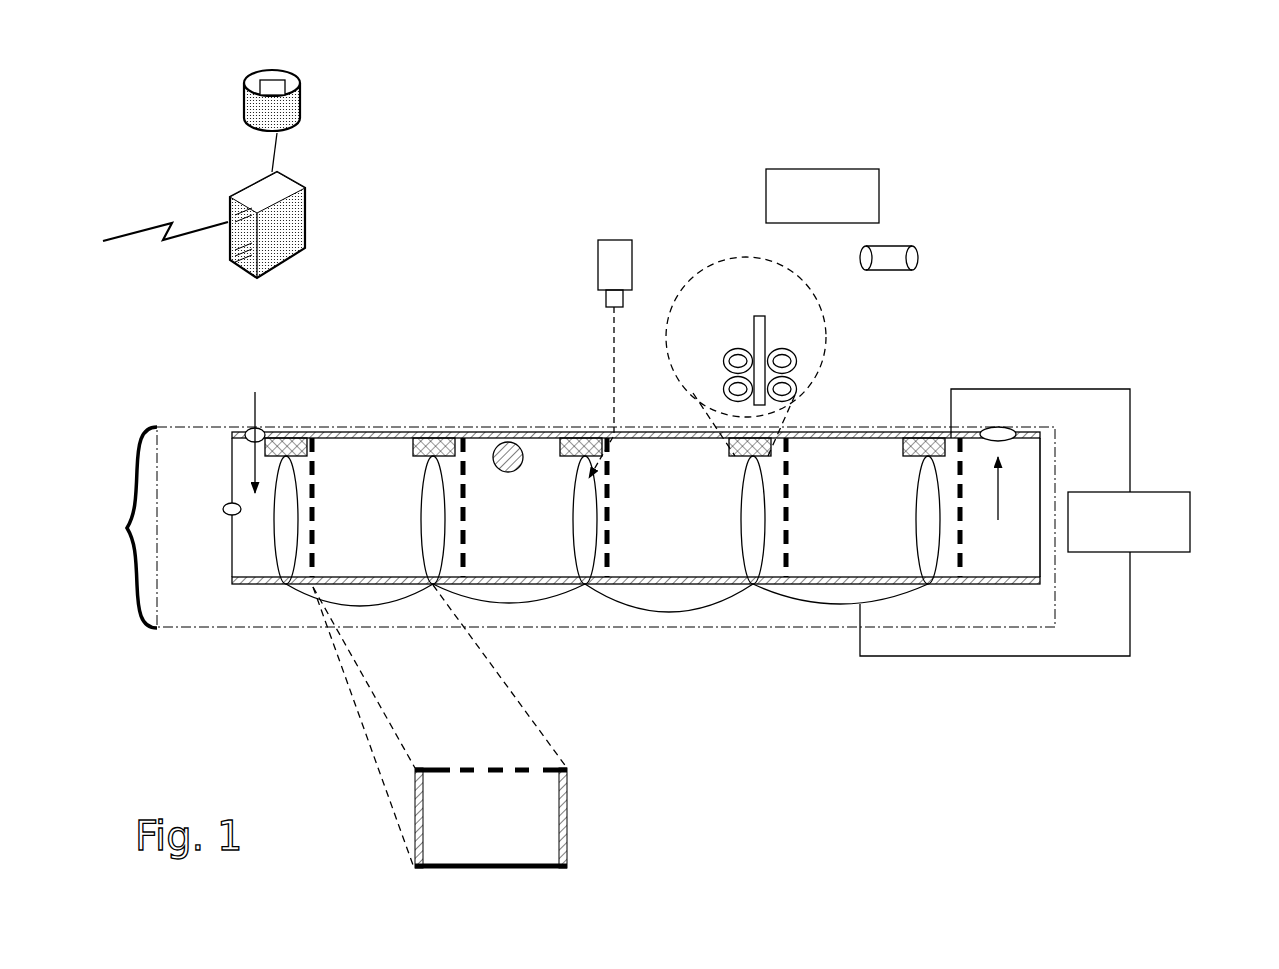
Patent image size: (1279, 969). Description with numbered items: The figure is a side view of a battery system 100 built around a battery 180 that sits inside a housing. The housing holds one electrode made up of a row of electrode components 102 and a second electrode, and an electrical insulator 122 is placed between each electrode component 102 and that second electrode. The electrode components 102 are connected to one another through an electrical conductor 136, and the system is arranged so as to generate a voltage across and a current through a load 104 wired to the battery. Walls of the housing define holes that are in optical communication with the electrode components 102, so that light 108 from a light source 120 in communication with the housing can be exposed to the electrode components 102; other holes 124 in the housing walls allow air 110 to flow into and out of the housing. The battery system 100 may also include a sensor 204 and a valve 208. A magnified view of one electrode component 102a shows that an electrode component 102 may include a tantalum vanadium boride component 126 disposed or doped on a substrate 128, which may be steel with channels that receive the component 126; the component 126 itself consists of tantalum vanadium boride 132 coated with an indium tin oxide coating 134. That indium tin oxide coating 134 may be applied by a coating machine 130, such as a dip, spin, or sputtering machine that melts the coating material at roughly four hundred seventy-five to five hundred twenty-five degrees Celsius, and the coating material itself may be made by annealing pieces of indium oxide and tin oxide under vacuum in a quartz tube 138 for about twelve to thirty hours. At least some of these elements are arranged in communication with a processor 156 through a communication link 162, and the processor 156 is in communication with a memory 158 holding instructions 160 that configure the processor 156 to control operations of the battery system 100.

The battery system 100 is at (1088, 141).
The electrode component 102 is at (425, 500).
The electrode component 102a is at (737, 500).
The load 104 is at (1190, 522).
The light 108 is at (613, 398).
The air 110 is at (252, 478).
The light source 120 is at (598, 265).
The electrical insulator 122 is at (583, 438).
The holes 124 is at (252, 430).
The tantalum vanadium boride component 126 is at (746, 356).
The substrate 128 is at (754, 335).
The coating machine 130 is at (850, 169).
The tantalum vanadium boride 132 is at (734, 365).
The indium tin oxide coating 134 is at (732, 358).
The electrical conductor 136 is at (670, 614).
The quartz tube 138 is at (897, 252).
The processor 156 is at (267, 277).
The memory 158 is at (254, 104).
The instructions 160 is at (262, 82).
The communication link 162 is at (170, 247).
The battery 180 is at (127, 528).
The sensor 204 is at (504, 443).
The valve 208 is at (224, 508).